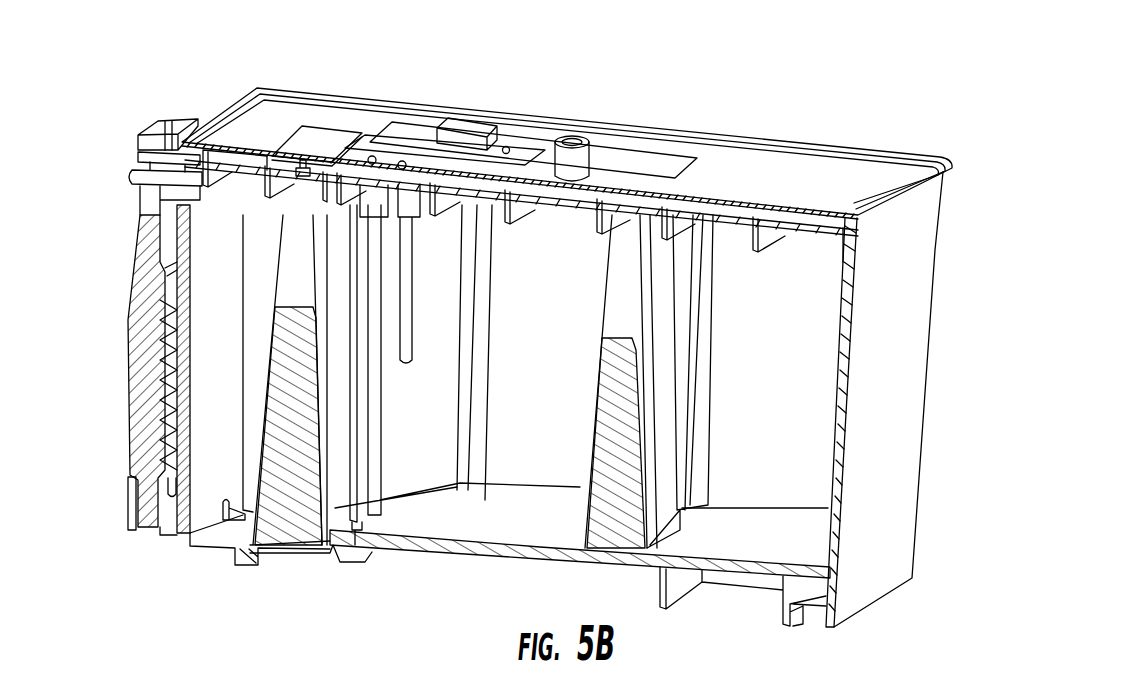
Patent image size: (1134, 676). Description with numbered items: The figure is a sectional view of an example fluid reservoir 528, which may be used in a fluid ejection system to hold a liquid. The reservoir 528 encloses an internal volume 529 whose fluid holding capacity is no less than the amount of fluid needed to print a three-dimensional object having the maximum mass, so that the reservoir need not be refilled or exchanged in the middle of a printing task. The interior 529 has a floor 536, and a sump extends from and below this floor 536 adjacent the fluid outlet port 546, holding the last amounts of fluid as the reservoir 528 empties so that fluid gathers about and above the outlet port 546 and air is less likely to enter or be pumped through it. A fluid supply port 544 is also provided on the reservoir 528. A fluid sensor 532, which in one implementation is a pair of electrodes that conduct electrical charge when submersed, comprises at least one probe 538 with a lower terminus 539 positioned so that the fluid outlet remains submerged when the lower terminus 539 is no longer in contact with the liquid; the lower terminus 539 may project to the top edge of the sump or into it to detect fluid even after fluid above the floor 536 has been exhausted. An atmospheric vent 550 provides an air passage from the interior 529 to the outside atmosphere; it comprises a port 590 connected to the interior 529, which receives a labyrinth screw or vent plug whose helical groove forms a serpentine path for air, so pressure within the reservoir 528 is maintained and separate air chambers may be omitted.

The fluid reservoir 528 is at (820, 81).
The internal volume 529 is at (533, 435).
The fluid sensor 532 is at (458, 120).
The floor 536 is at (731, 538).
The probe 538 is at (358, 485).
The lower terminus 539 is at (358, 528).
The fluid supply port 544 is at (178, 178).
The fluid outlet port 546 is at (226, 512).
The atmospheric vent 550 is at (645, 130).
The port 590 is at (583, 160).